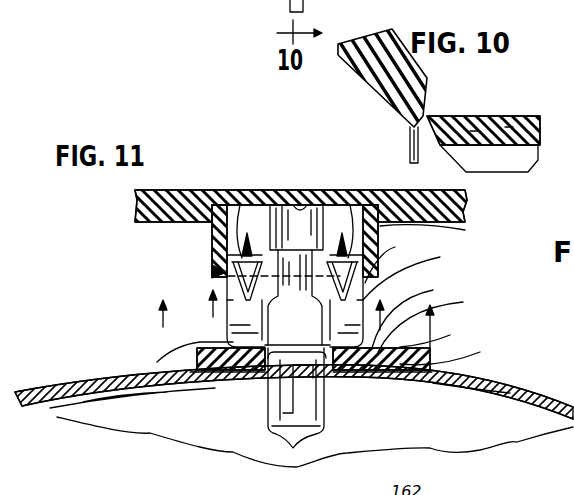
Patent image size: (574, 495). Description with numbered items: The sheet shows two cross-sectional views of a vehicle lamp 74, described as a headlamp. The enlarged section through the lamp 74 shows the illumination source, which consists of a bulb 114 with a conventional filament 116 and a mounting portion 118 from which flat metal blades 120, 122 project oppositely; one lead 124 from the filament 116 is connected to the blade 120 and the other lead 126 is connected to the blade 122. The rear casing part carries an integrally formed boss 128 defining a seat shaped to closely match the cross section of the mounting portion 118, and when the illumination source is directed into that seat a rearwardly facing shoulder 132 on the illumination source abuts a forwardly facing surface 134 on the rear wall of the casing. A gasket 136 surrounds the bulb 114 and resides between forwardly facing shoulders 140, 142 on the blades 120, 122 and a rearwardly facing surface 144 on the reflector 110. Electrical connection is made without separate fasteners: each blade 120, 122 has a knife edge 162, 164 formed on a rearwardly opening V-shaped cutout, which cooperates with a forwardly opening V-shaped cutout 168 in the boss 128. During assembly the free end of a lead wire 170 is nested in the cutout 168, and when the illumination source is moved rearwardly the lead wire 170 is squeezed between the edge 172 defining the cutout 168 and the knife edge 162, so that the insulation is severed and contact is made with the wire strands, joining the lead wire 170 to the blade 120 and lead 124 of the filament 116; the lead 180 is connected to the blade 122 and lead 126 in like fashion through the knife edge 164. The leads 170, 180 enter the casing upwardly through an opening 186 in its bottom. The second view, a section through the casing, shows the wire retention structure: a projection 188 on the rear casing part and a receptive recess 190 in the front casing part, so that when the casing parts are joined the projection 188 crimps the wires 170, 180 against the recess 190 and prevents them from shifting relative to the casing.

In FIG. 11, the lamp 74 is at (212, 178).
In FIG. 11, the reflector 110 is at (573, 362).
In FIG. 11, the bulb 114 is at (232, 455).
In FIG. 11, the filament 116 is at (300, 398).
In FIG. 11, the mounting portion 118 is at (414, 273).
In FIG. 11, the blade 120 is at (417, 315).
In FIG. 11, the blade 122 is at (233, 300).
In FIG. 11, the lead 124 is at (340, 300).
In FIG. 11, the lead 126 is at (238, 373).
In FIG. 11, the boss 128 is at (210, 228).
In FIG. 11, the shoulder 132 is at (283, 205).
In FIG. 11, the surface 134 is at (305, 205).
In FIG. 11, the gasket 136 is at (456, 352).
In FIG. 11, the shoulder 140 is at (157, 362).
In FIG. 11, the shoulder 142 is at (437, 324).
In FIG. 11, the surface 144 is at (441, 336).
In FIG. 11, the knife edge 162 is at (385, 249).
In FIG. 11, the knife edge 164 is at (212, 268).
In FIG. 11, the cutout 168 is at (344, 214).
In FIG. 11, the lead wire 170 is at (355, 214).
In FIG. 11, the edge 172 is at (400, 229).
In FIG. 11, the lead 180 is at (243, 232).
In FIG. 10, the opening 186 is at (288, 2).
In FIG. 10, the projection 188 is at (425, 116).
In FIG. 10, the recess 190 is at (411, 127).